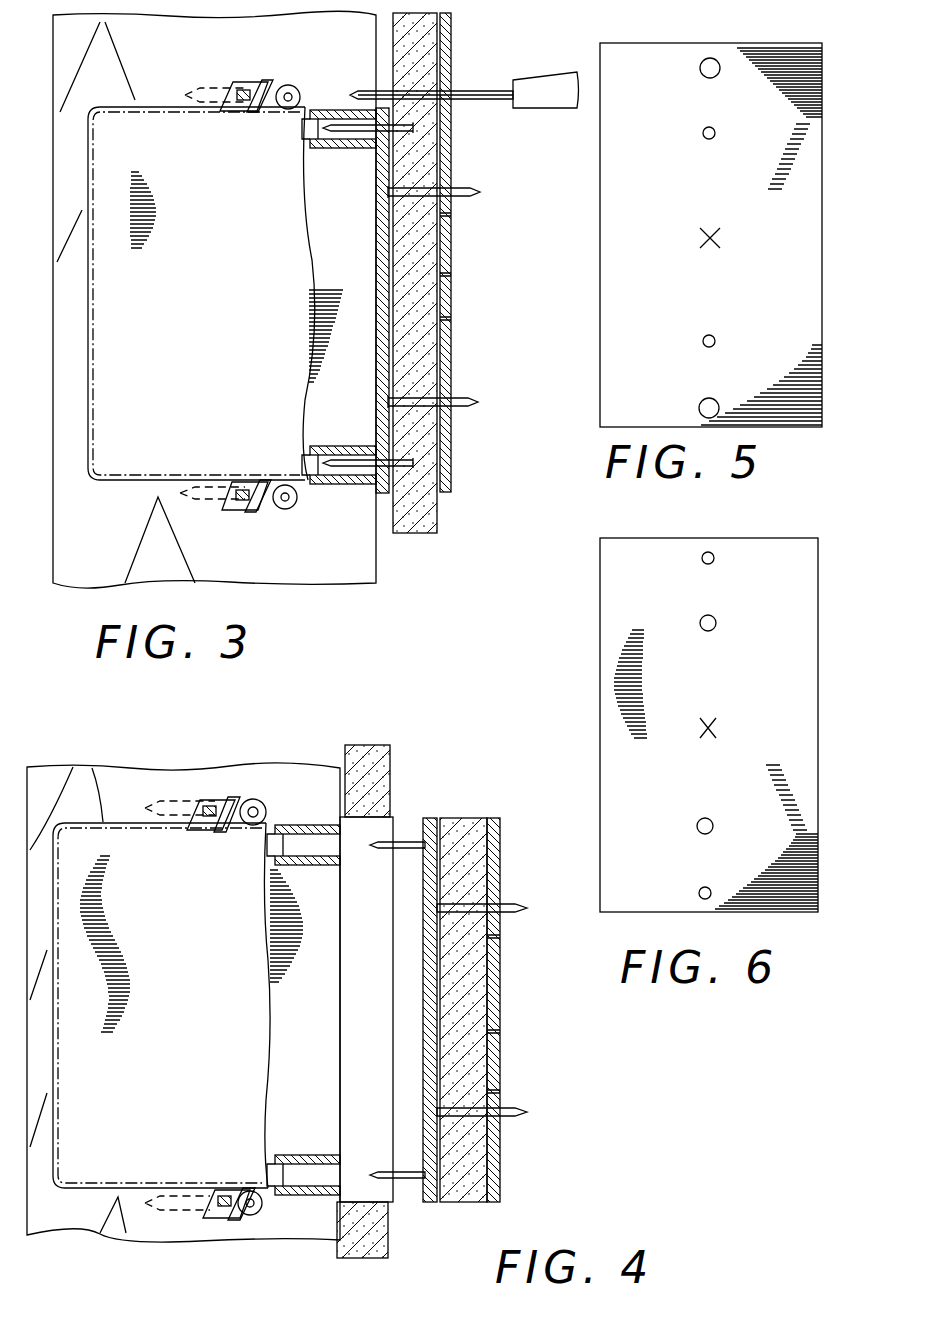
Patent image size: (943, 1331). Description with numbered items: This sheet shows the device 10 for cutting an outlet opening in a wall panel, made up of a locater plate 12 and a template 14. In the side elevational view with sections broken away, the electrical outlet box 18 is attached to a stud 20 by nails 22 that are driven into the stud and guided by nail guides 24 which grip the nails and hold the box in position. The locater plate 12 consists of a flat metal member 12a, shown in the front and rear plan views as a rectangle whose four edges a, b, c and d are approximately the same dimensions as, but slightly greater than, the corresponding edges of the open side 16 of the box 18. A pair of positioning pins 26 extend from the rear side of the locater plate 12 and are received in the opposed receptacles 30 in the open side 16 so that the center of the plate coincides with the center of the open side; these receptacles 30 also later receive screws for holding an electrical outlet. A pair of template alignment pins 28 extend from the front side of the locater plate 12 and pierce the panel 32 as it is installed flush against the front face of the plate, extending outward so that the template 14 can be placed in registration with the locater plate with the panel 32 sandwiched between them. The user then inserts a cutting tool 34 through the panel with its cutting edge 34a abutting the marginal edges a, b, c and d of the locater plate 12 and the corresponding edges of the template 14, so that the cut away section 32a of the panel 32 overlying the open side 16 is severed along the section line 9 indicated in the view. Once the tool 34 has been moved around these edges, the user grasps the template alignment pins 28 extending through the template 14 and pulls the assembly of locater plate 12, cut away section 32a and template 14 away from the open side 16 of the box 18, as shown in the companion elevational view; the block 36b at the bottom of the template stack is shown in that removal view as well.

In FIG. 3, the section line 9- 9 is at (352, 22).
In FIG. 3, the device 10 is at (406, 549).
In FIG. 3, the locater plate 12 is at (374, 289).
In FIG. 4, the locater plate 12 is at (421, 1000).
In FIG. 5, the locater plate 12 is at (828, 313).
In FIG. 6, the locater plate 12 is at (595, 626).
In FIG. 5, the flat metal member 12a is at (722, 201).
In FIG. 6, the flat metal member 12a is at (734, 684).
In FIG. 3, the template 14 is at (453, 289).
In FIG. 4, the template 14 is at (502, 1007).
In FIG. 3, the open side 16 is at (358, 350).
In FIG. 4, the open side 16 is at (328, 952).
In FIG. 3, the electrical outlet box 18 is at (176, 303).
In FIG. 4, the electrical outlet box 18 is at (136, 980).
In FIG. 3, the stud 20 is at (86, 533).
In FIG. 4, the stud 20 is at (70, 767).
In FIG. 3, the nails 22 is at (207, 88).
In FIG. 4, the nails 22 is at (165, 805).
In FIG. 3, the nail guides 24 is at (262, 112).
In FIG. 4, the nail guides 24 is at (250, 798).
In FIG. 3, the positioning pins 26 is at (420, 131).
In FIG. 4, the positioning pins 26 is at (405, 840).
In FIG. 5, the positioning pins 26 is at (699, 68).
In FIG. 6, the positioning pins 26 is at (701, 559).
In FIG. 3, the template alignment pins 28 is at (478, 199).
In FIG. 4, the template alignment pins 28 is at (512, 911).
In FIG. 5, the template alignment pins 28 is at (716, 133).
In FIG. 6, the template alignment pins 28 is at (715, 619).
In FIG. 3, the receptacles 30 is at (347, 128).
In FIG. 4, the receptacles 30 is at (311, 847).
In FIG. 3, the panel 32 is at (428, 45).
In FIG. 4, the panel 32 is at (366, 745).
In FIG. 4, the cut away section 32a is at (473, 1050).
In FIG. 3, the cutting tool 34 is at (494, 89).
In FIG. 3, the cutting edge 34a is at (360, 94).
In FIG. 4, the bottom block 36b is at (355, 1258).
In FIG. 5, the edge of the member a is at (755, 43).
In FIG. 6, the edge of the member a is at (765, 539).
In FIG. 5, the edge of the member b is at (823, 210).
In FIG. 6, the edge of the member b is at (599, 688).
In FIG. 5, the edge of the member c is at (803, 428).
In FIG. 6, the edge of the member c is at (797, 913).
In FIG. 5, the edge of the member d is at (600, 183).
In FIG. 6, the edge of the member d is at (800, 668).